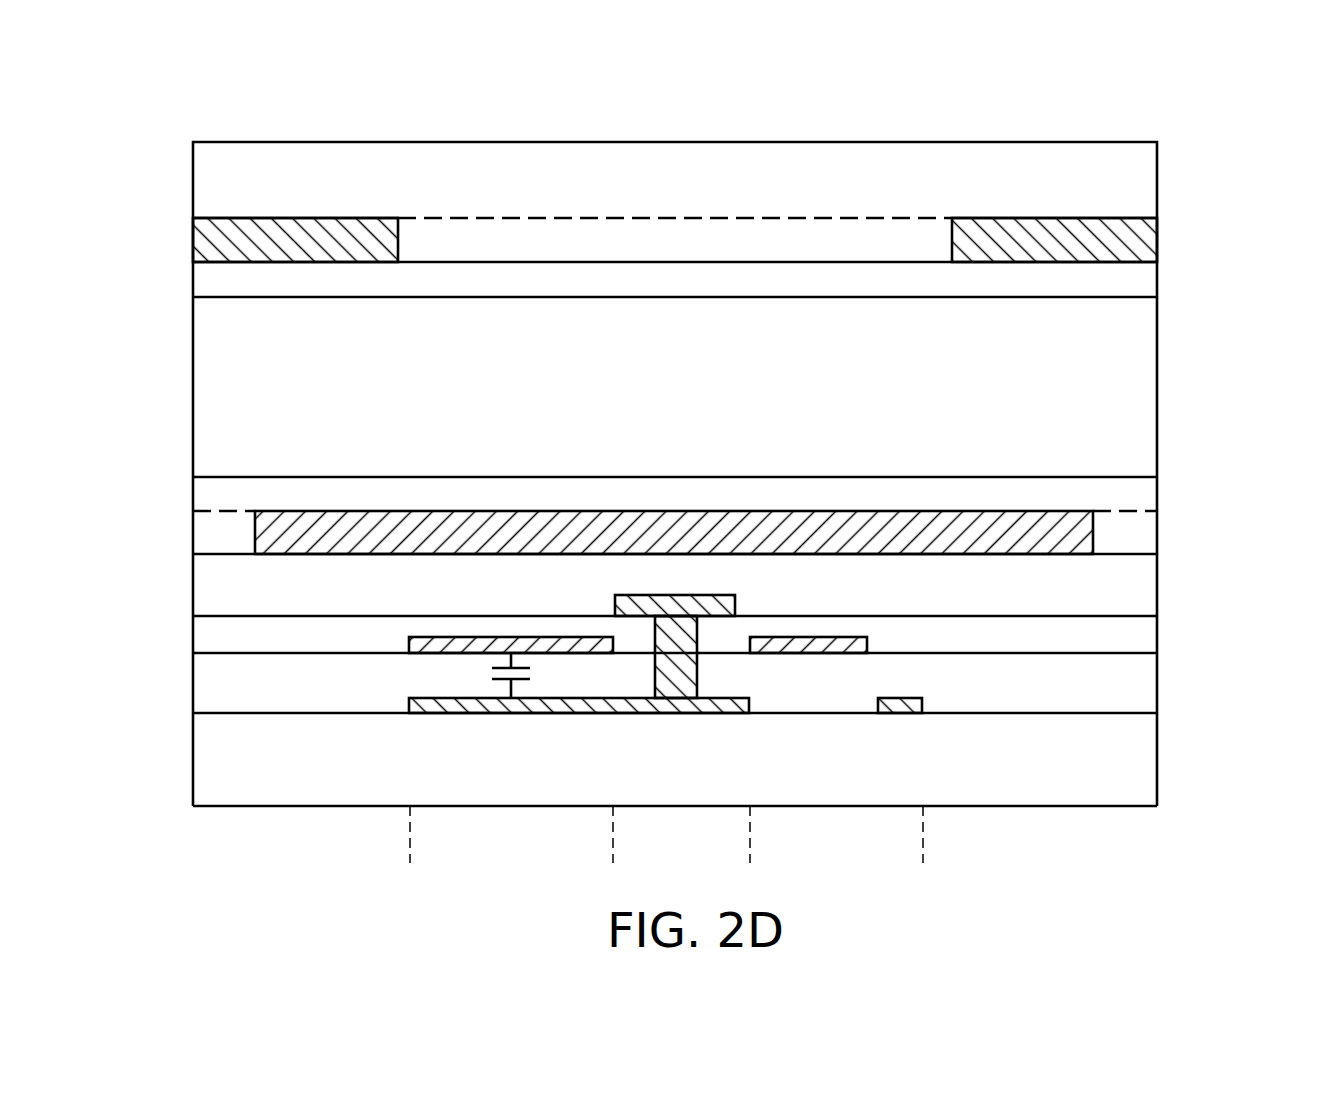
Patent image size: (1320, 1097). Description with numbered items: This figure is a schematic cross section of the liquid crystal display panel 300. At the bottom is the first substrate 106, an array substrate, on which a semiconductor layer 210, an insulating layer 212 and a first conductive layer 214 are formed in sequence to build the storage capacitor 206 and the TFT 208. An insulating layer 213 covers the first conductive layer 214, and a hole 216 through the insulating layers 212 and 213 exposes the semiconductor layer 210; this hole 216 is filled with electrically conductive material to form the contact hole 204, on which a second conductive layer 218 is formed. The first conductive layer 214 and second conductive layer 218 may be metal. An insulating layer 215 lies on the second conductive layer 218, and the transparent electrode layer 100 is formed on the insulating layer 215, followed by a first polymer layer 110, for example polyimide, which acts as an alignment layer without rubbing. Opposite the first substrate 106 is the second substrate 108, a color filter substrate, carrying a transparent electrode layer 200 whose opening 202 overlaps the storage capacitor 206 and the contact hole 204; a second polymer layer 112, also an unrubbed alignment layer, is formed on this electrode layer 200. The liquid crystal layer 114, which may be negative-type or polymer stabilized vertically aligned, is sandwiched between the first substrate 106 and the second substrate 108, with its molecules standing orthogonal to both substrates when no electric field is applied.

The liquid crystal display panel 300 is at (1200, 122).
The second substrate 108 is at (1133, 185).
The transparent electrode layer 200 is at (214, 251).
The opening 202 is at (515, 243).
The second polymer layer 112 is at (1133, 282).
The liquid crystal layer 114 is at (1133, 389).
The first polymer layer 110 is at (1133, 497).
The transparent electrode layer 100 is at (1075, 537).
The insulating layer 215 is at (212, 570).
The second conductive layer 218 is at (735, 600).
The first conductive layer 214 is at (435, 638).
The insulating layer 213 is at (215, 637).
The insulating layer 212 is at (215, 680).
The hole 216 is at (697, 678).
The semiconductor layer 210 is at (457, 705).
The first substrate 106 is at (1133, 765).
The storage capacitor 206 is at (597, 861).
The contact hole 204 is at (734, 861).
The TFT 208 is at (907, 861).